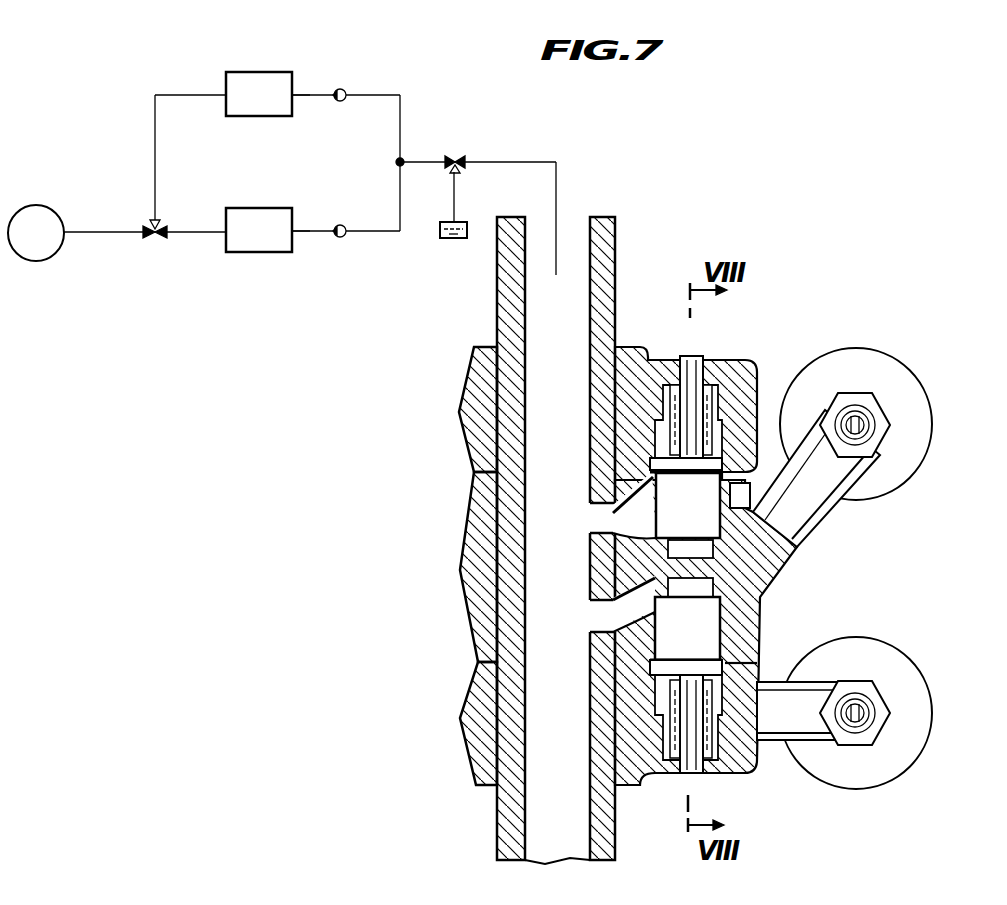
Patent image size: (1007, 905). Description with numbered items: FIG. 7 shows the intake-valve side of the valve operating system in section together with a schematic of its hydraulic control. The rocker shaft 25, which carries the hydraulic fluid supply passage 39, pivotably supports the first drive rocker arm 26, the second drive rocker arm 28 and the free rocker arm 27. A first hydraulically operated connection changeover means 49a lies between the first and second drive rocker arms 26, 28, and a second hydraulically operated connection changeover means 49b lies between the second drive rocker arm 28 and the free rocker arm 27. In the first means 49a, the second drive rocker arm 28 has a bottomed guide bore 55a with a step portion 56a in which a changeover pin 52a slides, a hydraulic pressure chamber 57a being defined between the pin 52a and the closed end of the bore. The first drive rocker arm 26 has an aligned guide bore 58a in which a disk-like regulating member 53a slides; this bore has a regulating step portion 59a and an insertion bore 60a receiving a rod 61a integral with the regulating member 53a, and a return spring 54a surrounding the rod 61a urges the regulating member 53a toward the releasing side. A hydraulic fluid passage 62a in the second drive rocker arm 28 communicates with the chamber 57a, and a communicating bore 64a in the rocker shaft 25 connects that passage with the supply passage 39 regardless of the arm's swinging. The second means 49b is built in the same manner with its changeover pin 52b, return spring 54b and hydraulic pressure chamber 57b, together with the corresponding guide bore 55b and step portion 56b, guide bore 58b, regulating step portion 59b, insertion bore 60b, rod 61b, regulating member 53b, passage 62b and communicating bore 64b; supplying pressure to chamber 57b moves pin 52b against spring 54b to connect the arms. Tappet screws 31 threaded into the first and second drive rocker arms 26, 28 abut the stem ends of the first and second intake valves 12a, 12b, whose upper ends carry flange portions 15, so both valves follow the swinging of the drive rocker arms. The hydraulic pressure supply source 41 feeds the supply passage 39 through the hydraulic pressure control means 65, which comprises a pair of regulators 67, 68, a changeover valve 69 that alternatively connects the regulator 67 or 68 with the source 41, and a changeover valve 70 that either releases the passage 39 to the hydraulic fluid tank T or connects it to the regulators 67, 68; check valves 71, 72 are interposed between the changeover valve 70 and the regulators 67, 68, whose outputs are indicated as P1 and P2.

The hydraulic pressure supply source 41 is at (48, 247).
The changeover valve 69 is at (153, 238).
The regulator 67 is at (270, 108).
The regulator 68 is at (270, 244).
The first pressure P1 is at (312, 94).
The second pressure P2 is at (312, 231).
The check valve 71 is at (346, 91).
The check valve 72 is at (345, 236).
The changeover valve 70 is at (458, 157).
The hydraulic fluid tank T is at (440, 235).
The hydraulic pressure control means 65 is at (311, 250).
The hydraulic fluid supply passage 39 is at (568, 313).
The free rocker arm 27 is at (468, 386).
The second drive rocker arm 28 is at (476, 633).
The first drive rocker arm 26 is at (473, 762).
The rocker shaft 25 is at (500, 830).
The second hydraulically operated connection changeover means 49b is at (733, 404).
The first hydraulically operated connection changeover means 49a is at (738, 627).
The upper port 64b is at (603, 513).
The communicating bore 64a is at (603, 612).
The upper passage 62b is at (648, 468).
The hydraulic fluid passage 62a is at (648, 580).
The upper chamber wall 56b is at (651, 548).
The step portion 56a is at (650, 628).
The upper bore 58b is at (713, 442).
The guide bore 58a is at (713, 692).
The upper sleeve 59b is at (653, 428).
The regulating step portion 59a is at (657, 700).
The upper pin 61b is at (692, 362).
The rod 61a is at (706, 762).
The upper pin body 60b is at (682, 362).
The insertion bore 60a is at (690, 742).
The return spring 54b is at (717, 386).
The return spring 54a is at (666, 773).
The upper seal 53b is at (650, 463).
The regulating member 53a is at (650, 663).
The changeover pin 52b is at (700, 516).
The changeover pin 52a is at (700, 639).
The hydraulic pressure chamber 57b is at (713, 551).
The hydraulic pressure chamber 57a is at (713, 585).
The upper chamber 55b is at (722, 525).
The guide bore 55a is at (722, 603).
The flange portion 15 is at (930, 417).
The second intake valve 12b is at (870, 346).
The first intake valve 12a is at (877, 654).
The tappet screw 31 is at (870, 418).